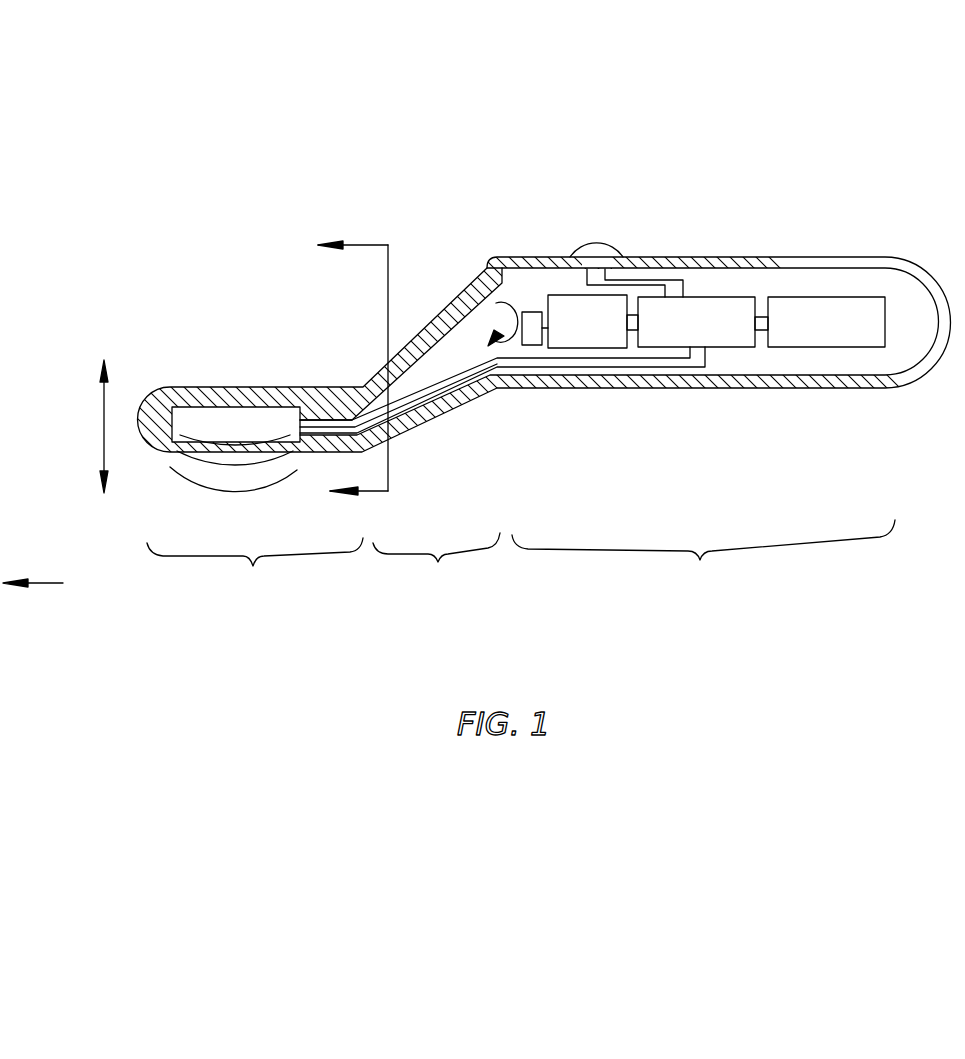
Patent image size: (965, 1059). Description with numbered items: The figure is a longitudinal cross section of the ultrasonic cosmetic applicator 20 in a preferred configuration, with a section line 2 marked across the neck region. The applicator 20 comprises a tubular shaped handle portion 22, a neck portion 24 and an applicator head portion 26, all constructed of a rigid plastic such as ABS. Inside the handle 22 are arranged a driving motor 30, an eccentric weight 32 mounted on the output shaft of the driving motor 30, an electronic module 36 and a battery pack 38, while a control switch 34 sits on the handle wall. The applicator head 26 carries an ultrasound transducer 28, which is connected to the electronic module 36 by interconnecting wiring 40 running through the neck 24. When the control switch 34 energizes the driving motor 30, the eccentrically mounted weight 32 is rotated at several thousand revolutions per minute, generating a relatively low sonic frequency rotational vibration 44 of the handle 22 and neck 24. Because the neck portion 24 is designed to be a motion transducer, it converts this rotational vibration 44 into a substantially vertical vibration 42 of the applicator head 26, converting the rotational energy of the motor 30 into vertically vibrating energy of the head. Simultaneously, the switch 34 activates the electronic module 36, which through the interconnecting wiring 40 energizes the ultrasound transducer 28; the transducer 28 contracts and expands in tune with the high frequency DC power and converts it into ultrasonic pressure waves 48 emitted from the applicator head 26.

The section line 2- 2 is at (340, 371).
The ultrasonic cosmetic applicator 20 is at (578, 128).
The handle portion 22 is at (703, 559).
The neck portion 24 is at (436, 566).
The applicator head portion 26 is at (255, 573).
The ultrasound transducer 28 is at (213, 422).
The driving motor 30 is at (568, 313).
The eccentric weight 32 is at (530, 318).
The control switch 34 is at (596, 243).
The electronic module 36 is at (698, 318).
The battery pack 38 is at (795, 305).
The interconnecting wiring 40 is at (637, 367).
The vertical vibration 42 is at (100, 427).
The rotational vibration 44 is at (493, 300).
The ultrasonic pressure waves 48 is at (203, 487).